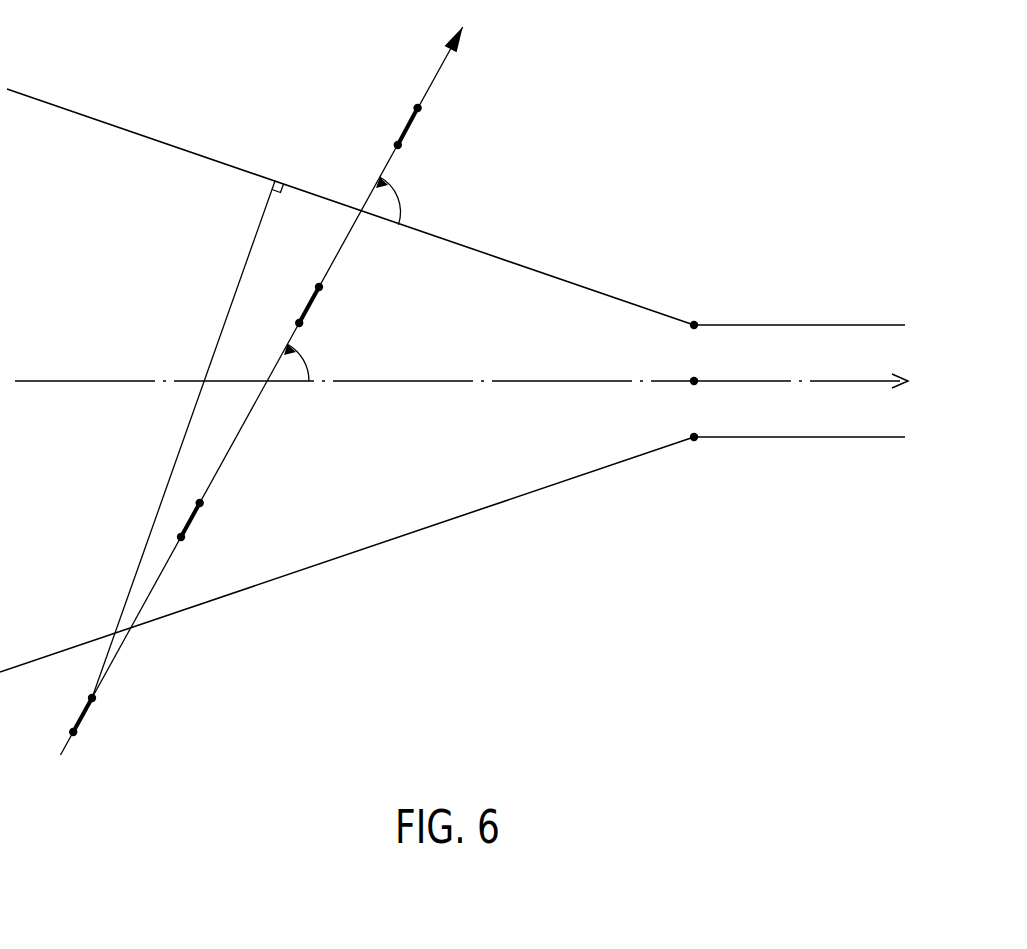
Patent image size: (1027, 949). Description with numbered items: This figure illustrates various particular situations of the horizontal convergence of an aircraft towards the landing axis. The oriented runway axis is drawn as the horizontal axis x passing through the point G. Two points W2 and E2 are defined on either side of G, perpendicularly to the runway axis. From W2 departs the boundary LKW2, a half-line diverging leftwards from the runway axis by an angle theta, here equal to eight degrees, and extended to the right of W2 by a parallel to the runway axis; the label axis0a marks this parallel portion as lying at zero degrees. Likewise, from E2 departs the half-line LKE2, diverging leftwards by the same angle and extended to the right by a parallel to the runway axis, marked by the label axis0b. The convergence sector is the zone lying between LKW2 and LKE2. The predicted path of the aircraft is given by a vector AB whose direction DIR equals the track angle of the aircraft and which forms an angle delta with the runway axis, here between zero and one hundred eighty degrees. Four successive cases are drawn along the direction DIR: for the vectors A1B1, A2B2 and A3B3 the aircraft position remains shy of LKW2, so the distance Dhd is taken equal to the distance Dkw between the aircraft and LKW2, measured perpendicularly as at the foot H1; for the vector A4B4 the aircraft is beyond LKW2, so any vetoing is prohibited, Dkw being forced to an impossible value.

The x axis x is at (461, 370).
The second exit line LKW2 is at (632, 303).
The exit point W2 is at (797, 312).
The origin point G is at (703, 369).
The entry point E2 is at (797, 425).
The second entry line LKE2 is at (512, 500).
The direction line DIR is at (438, 78).
The perpendicular foot point H1 is at (195, 421).
The fourth segment A4B4 is at (416, 106).
The third segment A3B3 is at (317, 286).
The second segment A2B2 is at (198, 501).
The first segment A1B1 is at (91, 696).
The axis at 0 degrees label (upper) axis0a is at (520, 267).
The axis at 0 degrees label (lower) axis0b is at (403, 515).